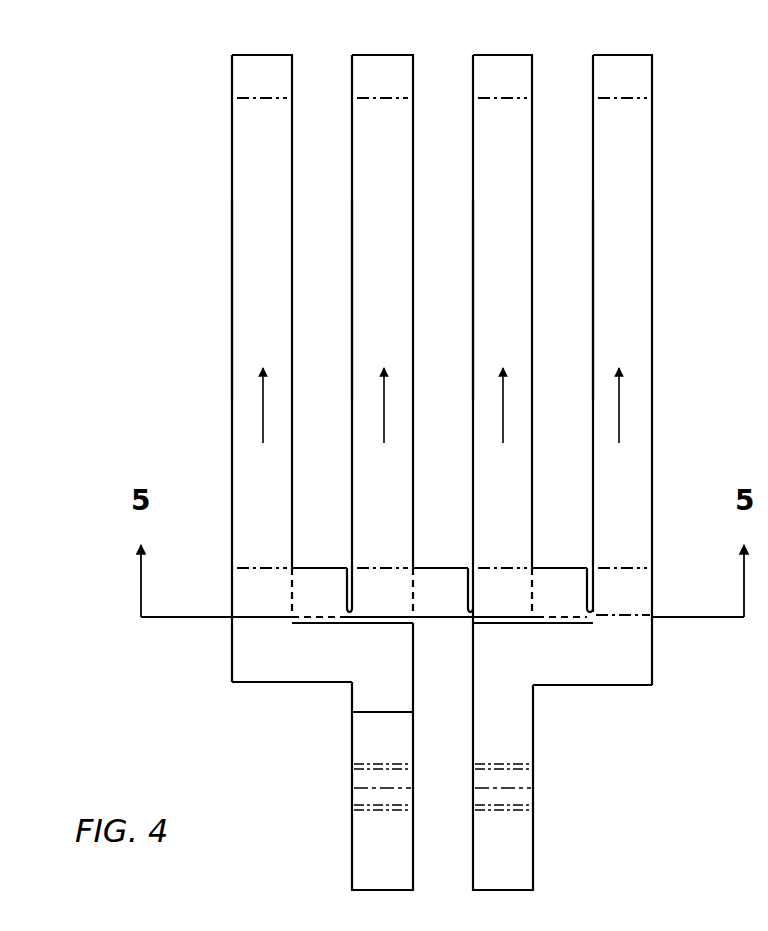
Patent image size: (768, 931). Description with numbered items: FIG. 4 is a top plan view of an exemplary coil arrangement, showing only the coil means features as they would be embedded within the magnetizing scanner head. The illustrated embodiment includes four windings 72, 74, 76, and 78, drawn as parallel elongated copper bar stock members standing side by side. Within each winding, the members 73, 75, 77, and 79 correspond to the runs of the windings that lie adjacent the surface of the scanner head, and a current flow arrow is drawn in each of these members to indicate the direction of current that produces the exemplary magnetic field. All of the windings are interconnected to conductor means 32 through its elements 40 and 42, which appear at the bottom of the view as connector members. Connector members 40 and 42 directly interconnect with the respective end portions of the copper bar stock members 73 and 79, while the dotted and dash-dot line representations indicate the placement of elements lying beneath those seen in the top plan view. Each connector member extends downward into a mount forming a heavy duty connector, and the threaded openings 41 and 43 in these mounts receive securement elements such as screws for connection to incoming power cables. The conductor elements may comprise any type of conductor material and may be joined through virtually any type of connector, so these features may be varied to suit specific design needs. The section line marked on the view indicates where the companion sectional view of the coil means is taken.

The conductor means 32 is at (565, 793).
The connector member 40 is at (325, 670).
The threaded opening 41 is at (371, 766).
The connector member 42 is at (578, 669).
The threaded opening 43 is at (508, 766).
The winding 72 is at (246, 55).
The copper bar stock member 73 is at (238, 313).
The winding 74 is at (366, 55).
The copper bar stock member 75 is at (358, 313).
The winding 76 is at (484, 55).
The copper bar stock member 77 is at (479, 312).
The winding 78 is at (603, 55).
The copper bar stock member 79 is at (599, 312).